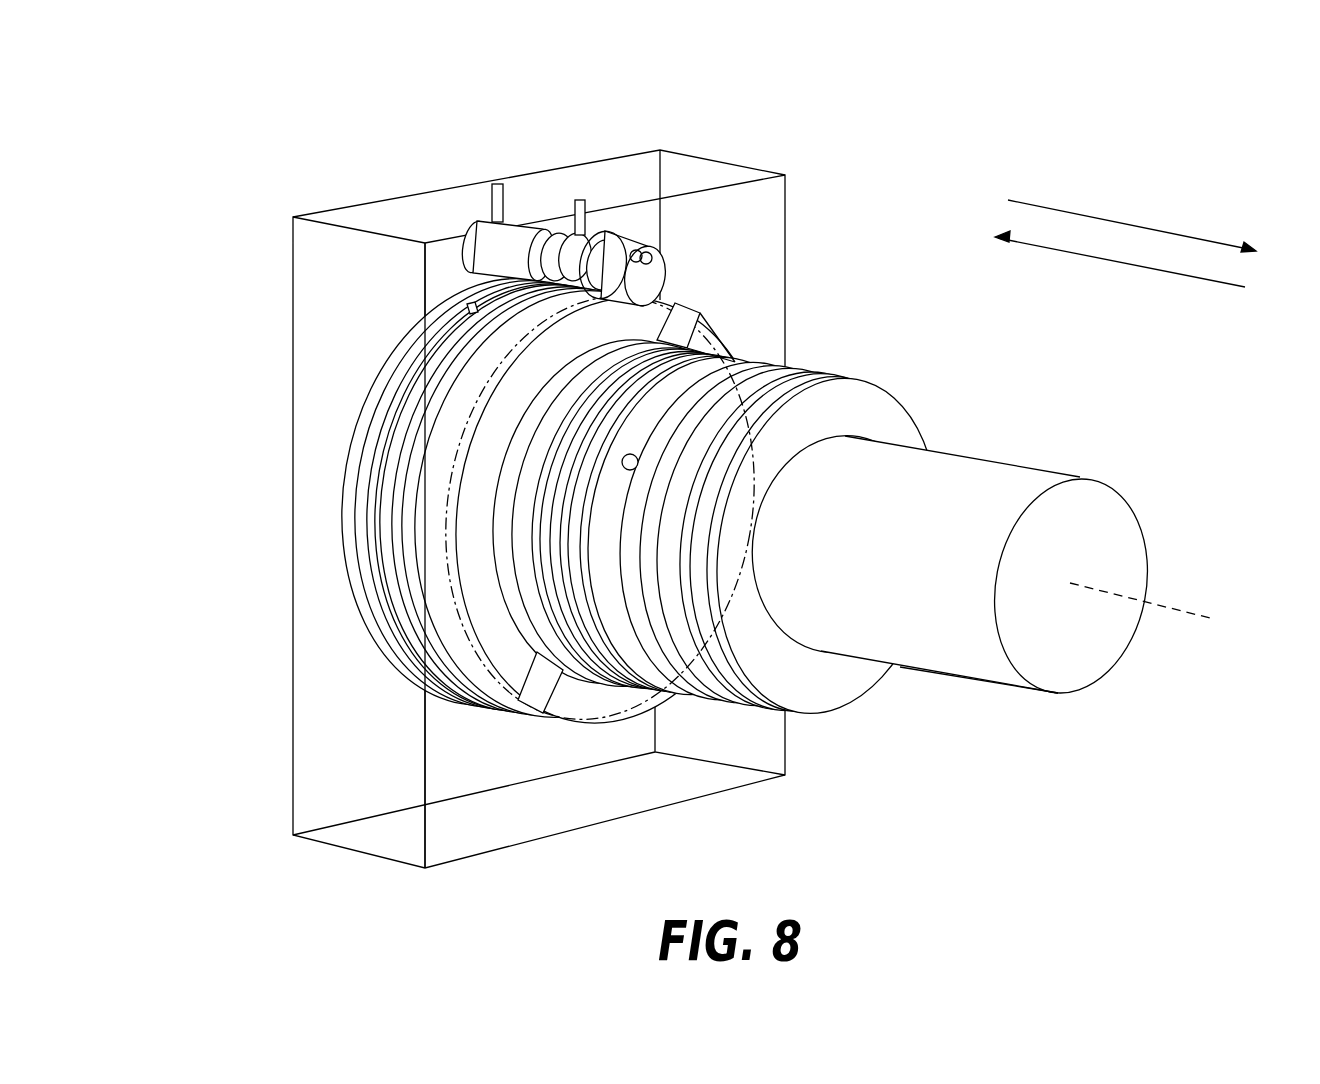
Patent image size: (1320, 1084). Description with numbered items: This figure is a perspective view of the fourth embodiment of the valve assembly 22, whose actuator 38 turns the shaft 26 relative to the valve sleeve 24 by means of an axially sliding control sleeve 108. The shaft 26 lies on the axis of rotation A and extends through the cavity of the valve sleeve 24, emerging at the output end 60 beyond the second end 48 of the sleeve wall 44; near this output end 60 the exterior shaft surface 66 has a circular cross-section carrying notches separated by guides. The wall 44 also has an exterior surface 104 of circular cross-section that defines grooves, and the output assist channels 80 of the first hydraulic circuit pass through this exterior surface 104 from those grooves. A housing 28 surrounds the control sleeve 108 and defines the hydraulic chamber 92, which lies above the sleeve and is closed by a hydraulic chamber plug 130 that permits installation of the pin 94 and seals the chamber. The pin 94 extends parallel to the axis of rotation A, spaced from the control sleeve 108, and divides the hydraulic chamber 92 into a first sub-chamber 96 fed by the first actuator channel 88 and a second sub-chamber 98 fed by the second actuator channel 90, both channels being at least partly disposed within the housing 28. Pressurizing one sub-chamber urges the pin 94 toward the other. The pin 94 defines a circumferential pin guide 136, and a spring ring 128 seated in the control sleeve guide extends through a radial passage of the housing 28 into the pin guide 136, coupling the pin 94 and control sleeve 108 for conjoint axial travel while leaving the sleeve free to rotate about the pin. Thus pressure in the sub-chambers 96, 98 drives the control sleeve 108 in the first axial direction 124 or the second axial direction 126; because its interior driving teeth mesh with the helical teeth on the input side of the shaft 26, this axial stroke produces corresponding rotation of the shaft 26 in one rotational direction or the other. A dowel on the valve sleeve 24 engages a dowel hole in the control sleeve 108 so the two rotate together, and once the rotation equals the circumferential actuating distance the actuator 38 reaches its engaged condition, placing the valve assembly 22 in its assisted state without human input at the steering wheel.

The valve assembly 22 is at (239, 203).
The valve sleeve 24 is at (862, 398).
The shaft 26 is at (987, 481).
The housing 28 is at (778, 215).
The actuator 38 is at (572, 108).
The wall 44 is at (778, 365).
The second end 48 is at (817, 683).
The output end 60 is at (1125, 540).
The exterior shaft surface 66 is at (1025, 683).
The output assist channels 80 is at (622, 462).
The first actuator channel 88 is at (497, 184).
The second actuator channel 90 is at (580, 200).
The hydraulic chamber 92 is at (477, 248).
The pin 94 is at (482, 235).
The first sub-chamber 96 is at (470, 265).
The second sub-chamber 98 is at (557, 240).
The exterior surface 104 is at (737, 707).
The control sleeve 108 is at (437, 483).
The first axial direction 124 is at (1114, 218).
The second axial direction 126 is at (1138, 266).
The spring ring 128 is at (415, 385).
The hydraulic chamber plug 130 is at (645, 270).
The pin guide 136 is at (548, 245).
The axis of rotation A is at (1152, 608).